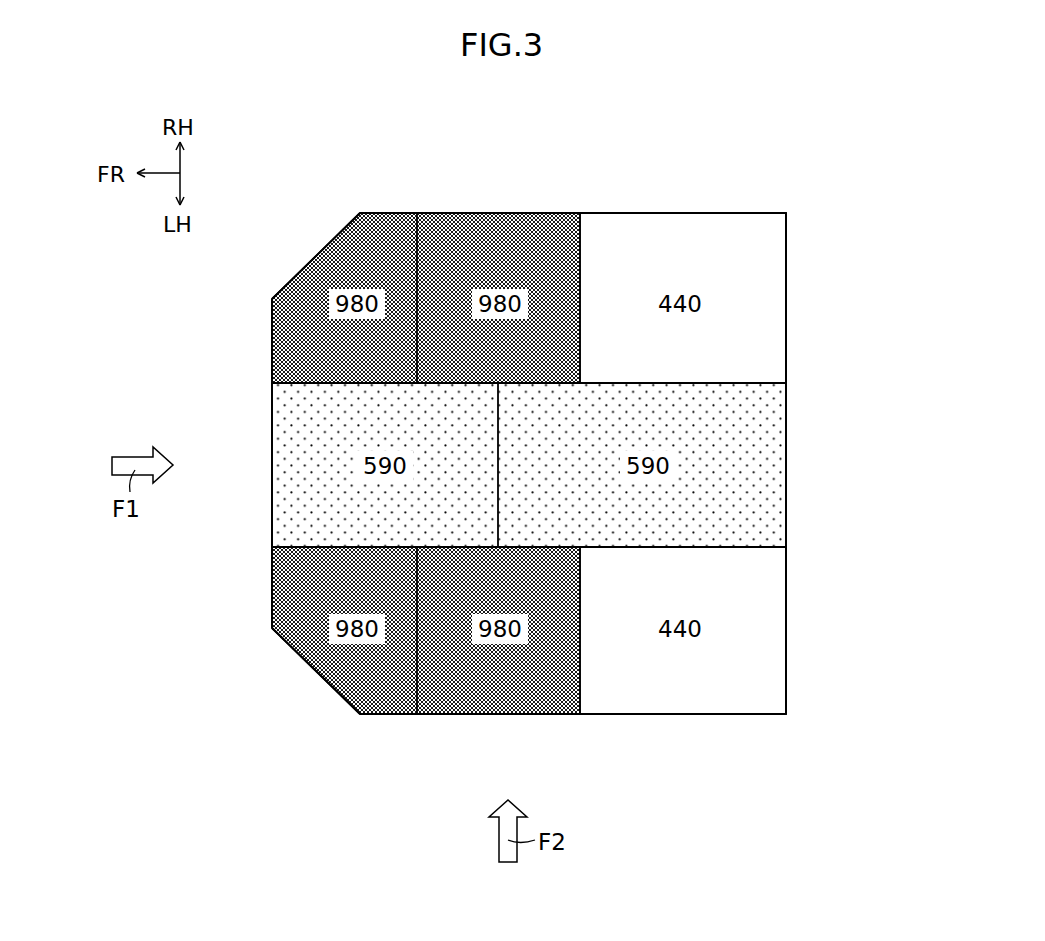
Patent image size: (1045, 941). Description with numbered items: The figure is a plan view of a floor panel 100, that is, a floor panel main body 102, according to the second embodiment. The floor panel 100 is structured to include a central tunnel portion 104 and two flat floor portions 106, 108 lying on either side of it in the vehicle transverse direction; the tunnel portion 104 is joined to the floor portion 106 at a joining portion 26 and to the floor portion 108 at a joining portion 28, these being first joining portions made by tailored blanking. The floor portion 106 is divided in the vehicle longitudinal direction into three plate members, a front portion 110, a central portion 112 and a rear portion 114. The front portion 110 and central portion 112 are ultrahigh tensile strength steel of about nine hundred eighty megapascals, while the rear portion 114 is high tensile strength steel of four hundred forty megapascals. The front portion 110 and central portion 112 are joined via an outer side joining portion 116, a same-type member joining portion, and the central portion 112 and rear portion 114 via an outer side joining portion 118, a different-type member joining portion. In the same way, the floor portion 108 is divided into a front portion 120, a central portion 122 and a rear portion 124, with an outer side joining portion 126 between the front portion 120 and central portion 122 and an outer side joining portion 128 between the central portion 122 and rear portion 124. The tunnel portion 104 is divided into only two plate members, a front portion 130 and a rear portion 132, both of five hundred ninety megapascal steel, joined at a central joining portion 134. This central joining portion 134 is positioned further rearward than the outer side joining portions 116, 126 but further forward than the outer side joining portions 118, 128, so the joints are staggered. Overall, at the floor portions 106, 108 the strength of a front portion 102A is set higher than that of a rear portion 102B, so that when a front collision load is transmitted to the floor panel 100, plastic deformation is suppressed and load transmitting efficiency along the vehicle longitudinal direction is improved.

The floor panel 100 is at (800, 143).
The floor panel main body 102 is at (703, 206).
The front portion 102A is at (359, 213).
The rear portion 102B is at (648, 228).
The tunnel portion 104 is at (272, 430).
The floor portion 106 is at (272, 345).
The floor portion 108 is at (272, 590).
The front portion 110 is at (318, 256).
The central portion 112 is at (497, 222).
The rear portion 114 is at (760, 228).
The outer side joining portion 116 is at (405, 225).
The outer side joining portion 118 is at (568, 225).
The front portion 120 is at (328, 683).
The central portion 122 is at (490, 712).
The rear portion 124 is at (680, 702).
The outer side joining portion 126 is at (402, 716).
The outer side joining portion 128 is at (562, 714).
The front portion 130 is at (288, 500).
The rear portion 132 is at (770, 418).
The central joining portion 134 is at (503, 410).
The joining portion 26 is at (718, 382).
The joining portion 28 is at (730, 548).